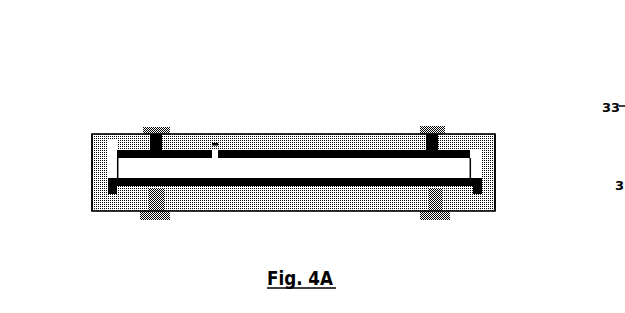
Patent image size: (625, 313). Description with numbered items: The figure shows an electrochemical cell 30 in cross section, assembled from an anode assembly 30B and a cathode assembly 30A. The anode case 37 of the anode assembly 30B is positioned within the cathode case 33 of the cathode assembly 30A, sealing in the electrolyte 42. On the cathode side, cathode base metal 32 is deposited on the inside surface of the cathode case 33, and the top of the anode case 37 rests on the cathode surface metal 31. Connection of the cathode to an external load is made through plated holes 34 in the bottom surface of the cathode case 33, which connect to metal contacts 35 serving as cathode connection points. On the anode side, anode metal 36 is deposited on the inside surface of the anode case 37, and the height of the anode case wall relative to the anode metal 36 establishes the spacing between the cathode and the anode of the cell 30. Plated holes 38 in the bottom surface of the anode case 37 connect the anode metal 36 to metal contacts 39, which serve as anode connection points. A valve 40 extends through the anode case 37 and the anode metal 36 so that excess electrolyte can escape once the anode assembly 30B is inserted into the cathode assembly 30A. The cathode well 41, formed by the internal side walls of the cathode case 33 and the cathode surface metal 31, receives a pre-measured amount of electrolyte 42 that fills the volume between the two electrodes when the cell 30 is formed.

The electrochemical cell 30 is at (468, 107).
The cathode assembly 30A is at (495, 172).
The anode assembly 30B is at (116, 145).
The cathode surface metal 31 is at (321, 184).
The cathode base metal 32 is at (269, 191).
The cathode case 33 is at (485, 200).
The plated holes 34 is at (152, 202).
The metal contacts 35 is at (438, 217).
The anode metal 36 is at (343, 155).
The anode case 37 is at (121, 139).
The plated holes 38 is at (429, 144).
The metal contacts 39 is at (153, 127).
The valve 40 is at (213, 131).
The cathode well 41 is at (280, 169).
The electrolyte 42 is at (322, 173).